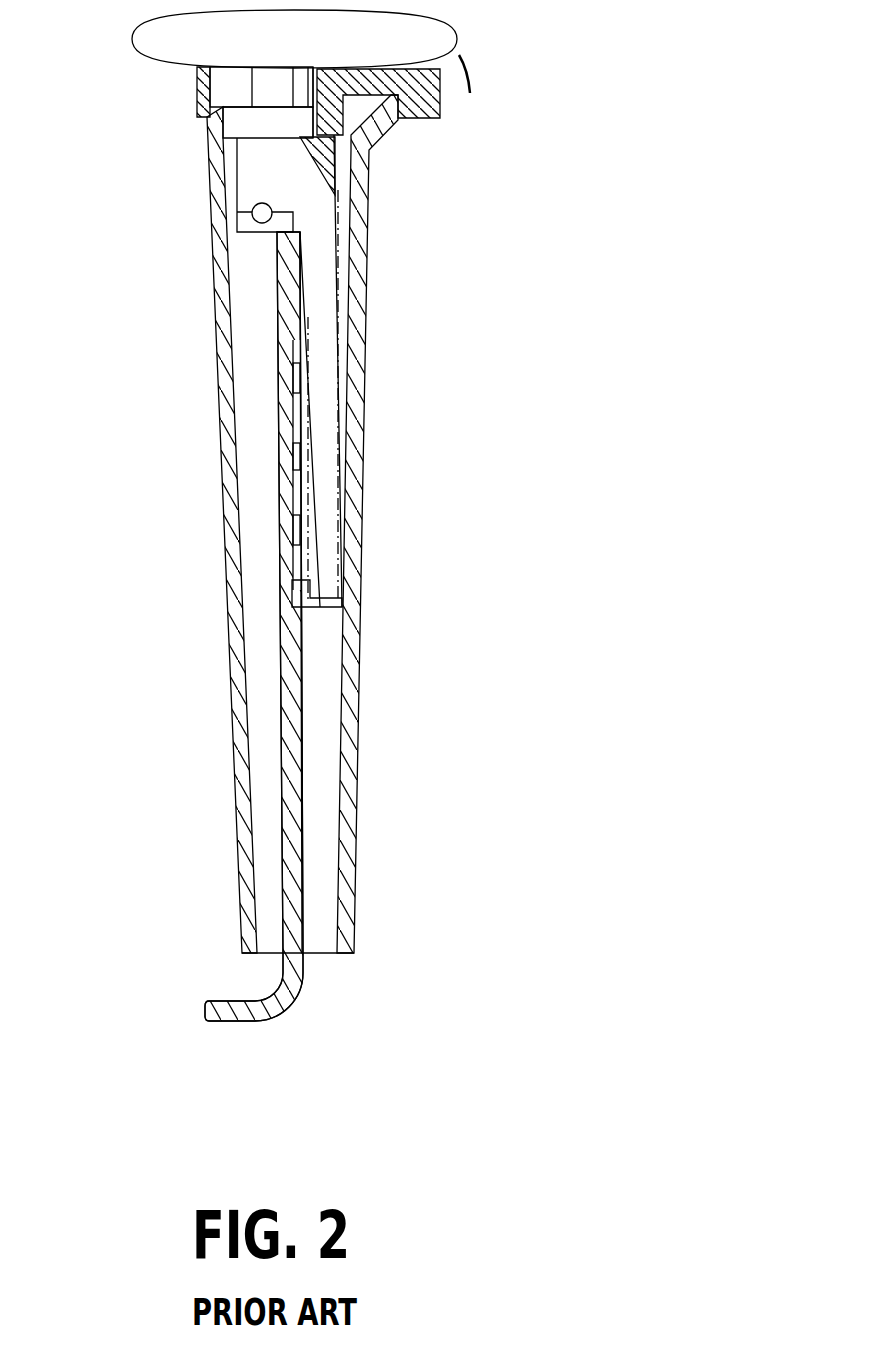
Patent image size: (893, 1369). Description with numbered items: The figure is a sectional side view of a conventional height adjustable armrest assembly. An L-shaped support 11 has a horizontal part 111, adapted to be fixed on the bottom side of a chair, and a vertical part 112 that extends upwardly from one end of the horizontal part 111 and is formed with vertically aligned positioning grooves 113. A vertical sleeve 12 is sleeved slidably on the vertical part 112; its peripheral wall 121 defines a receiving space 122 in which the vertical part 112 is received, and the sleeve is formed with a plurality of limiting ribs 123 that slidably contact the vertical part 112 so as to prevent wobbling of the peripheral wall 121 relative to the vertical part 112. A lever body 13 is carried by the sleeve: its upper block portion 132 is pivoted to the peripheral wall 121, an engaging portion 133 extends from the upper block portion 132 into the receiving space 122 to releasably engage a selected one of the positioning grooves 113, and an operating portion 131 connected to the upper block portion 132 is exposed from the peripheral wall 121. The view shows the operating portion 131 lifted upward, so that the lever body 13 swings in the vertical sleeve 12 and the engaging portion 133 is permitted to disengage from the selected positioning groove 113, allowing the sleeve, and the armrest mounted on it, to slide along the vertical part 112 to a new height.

The L-shaped support 11 is at (292, 997).
The horizontal part 111 is at (243, 1010).
The vertical part 112 is at (292, 795).
The positioning grooves 113 is at (297, 380).
The vertical sleeve 12 is at (218, 323).
The peripheral wall 121 is at (230, 408).
The receiving space 122 is at (320, 698).
The limiting ribs 123 is at (247, 270).
The lever body 13 is at (427, 118).
The operating portion 131 is at (440, 97).
The upper block portion 132 is at (253, 160).
The engaging portion 133 is at (297, 592).